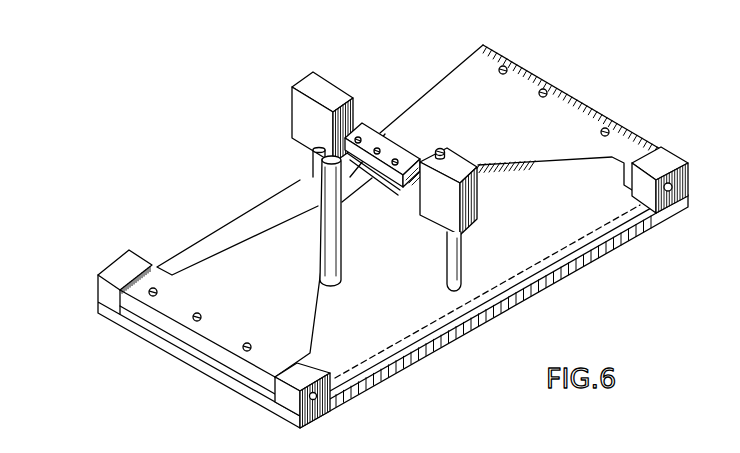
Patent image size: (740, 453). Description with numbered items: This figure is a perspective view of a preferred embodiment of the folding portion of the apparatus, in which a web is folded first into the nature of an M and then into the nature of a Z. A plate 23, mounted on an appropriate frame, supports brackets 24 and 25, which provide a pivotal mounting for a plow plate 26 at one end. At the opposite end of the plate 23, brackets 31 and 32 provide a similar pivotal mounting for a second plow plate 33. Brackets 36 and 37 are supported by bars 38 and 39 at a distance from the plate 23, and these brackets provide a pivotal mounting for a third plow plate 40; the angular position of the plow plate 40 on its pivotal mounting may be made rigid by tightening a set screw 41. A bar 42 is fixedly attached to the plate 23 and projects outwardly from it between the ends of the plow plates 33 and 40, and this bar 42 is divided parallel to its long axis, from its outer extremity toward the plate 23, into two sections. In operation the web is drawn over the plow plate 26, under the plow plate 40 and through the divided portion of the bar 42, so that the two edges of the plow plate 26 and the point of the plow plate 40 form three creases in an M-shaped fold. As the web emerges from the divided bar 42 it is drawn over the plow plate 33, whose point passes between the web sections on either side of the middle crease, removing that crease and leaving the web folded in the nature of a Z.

The plate 23 is at (590, 227).
The bracket 24 is at (672, 160).
The bracket 25 is at (494, 52).
The plow plate 26 is at (460, 71).
The bracket 31 is at (118, 267).
The bracket 32 is at (287, 398).
The plow plate 33 is at (304, 317).
The bracket 36 is at (480, 198).
The bracket 37 is at (333, 88).
The bar 38 is at (461, 266).
The bar 39 is at (316, 152).
The plow plate 40 is at (357, 185).
The set screw 41 is at (446, 151).
The bar 42 is at (340, 261).